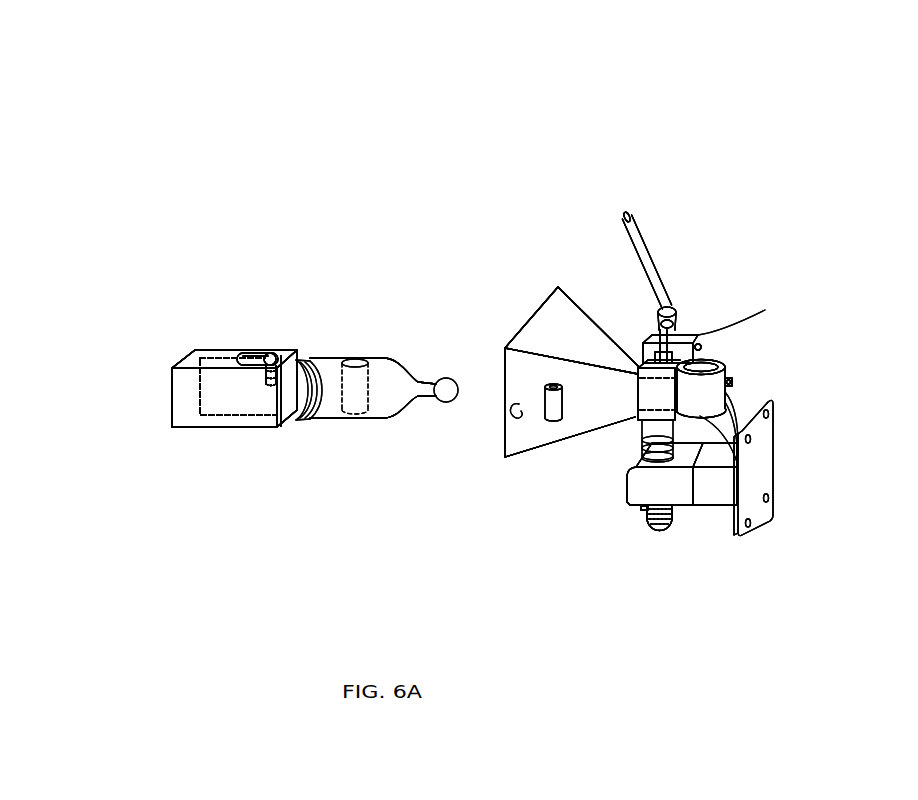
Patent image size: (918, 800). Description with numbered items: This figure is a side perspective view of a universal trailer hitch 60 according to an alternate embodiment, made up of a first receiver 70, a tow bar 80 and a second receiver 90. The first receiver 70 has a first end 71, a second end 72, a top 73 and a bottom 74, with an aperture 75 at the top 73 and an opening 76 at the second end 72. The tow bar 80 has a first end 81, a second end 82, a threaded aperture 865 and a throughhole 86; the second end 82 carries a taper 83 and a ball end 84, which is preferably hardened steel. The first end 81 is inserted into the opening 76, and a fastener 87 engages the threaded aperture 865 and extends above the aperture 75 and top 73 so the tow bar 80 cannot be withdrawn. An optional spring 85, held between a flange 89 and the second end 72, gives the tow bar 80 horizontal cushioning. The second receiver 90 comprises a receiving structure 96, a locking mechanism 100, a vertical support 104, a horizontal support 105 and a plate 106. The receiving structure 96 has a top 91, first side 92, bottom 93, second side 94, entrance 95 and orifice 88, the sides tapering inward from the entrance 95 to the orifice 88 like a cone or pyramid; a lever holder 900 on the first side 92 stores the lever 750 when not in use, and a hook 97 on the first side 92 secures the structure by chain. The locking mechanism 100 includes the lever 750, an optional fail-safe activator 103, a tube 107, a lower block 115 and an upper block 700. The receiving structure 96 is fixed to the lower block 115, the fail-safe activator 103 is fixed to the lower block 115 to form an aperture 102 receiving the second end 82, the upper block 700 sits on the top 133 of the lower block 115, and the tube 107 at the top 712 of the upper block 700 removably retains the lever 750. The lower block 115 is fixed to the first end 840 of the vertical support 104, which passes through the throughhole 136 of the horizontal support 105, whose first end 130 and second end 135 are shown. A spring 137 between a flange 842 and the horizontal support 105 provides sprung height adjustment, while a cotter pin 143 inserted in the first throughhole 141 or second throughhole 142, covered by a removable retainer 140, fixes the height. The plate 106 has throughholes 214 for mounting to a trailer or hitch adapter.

The universal trailer hitch 60 is at (408, 114).
The first receiver 70 is at (225, 363).
The first end 71 is at (192, 362).
The second end 72 is at (288, 350).
The top 73 is at (197, 350).
The bottom 74 is at (260, 430).
The aperture 75 is at (273, 358).
The opening 76 is at (308, 363).
The tow bar 80 is at (330, 412).
The first end 81 is at (210, 397).
The second end 82 is at (433, 407).
The taper 83 is at (402, 357).
The ball end 84 is at (431, 393).
The spring 85 is at (282, 427).
The throughhole 86 is at (355, 361).
The fastener 87 is at (253, 358).
The orifice 88 is at (640, 386).
The flange 89 is at (318, 372).
The threaded aperture 865 is at (270, 380).
The second receiver 90 is at (775, 188).
The top 91 is at (580, 333).
The first side 92 is at (508, 458).
The bottom 93 is at (553, 451).
The second side 94 is at (624, 324).
The entrance 95 is at (503, 433).
The receiving structure 96 is at (585, 405).
The hook 97 is at (507, 410).
The lever holder 900 is at (547, 386).
The top 133 is at (562, 343).
The locking mechanism 100 is at (713, 312).
The aperture 102 is at (728, 366).
The fail-safe activator 103 is at (727, 374).
The vertical support 104 is at (712, 420).
The horizontal support 105 is at (630, 503).
The plate 106 is at (762, 473).
The tube 107 is at (683, 328).
The lower block 115 is at (730, 392).
The first end 130 is at (628, 438).
The second end 135 is at (738, 501).
The throughhole 136 is at (631, 501).
The spring 137 is at (722, 494).
The removable retainer 140 is at (658, 531).
The first throughhole 141 is at (670, 512).
The second throughhole 142 is at (663, 527).
The cotter pin 143 is at (643, 511).
The throughholes 214 is at (772, 414).
The upper block 700 is at (700, 360).
The top 712 is at (692, 322).
The lever 750 is at (634, 232).
The first end 840 is at (724, 403).
The flange 842 is at (738, 452).